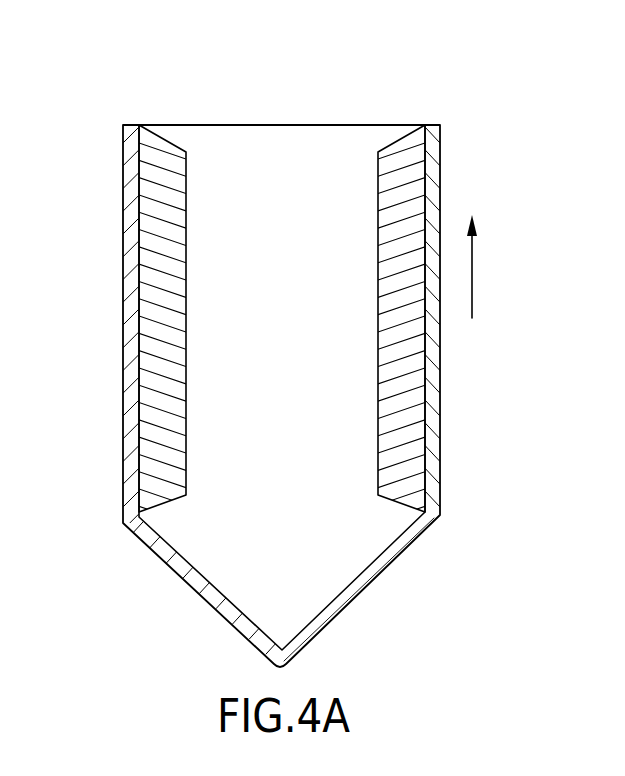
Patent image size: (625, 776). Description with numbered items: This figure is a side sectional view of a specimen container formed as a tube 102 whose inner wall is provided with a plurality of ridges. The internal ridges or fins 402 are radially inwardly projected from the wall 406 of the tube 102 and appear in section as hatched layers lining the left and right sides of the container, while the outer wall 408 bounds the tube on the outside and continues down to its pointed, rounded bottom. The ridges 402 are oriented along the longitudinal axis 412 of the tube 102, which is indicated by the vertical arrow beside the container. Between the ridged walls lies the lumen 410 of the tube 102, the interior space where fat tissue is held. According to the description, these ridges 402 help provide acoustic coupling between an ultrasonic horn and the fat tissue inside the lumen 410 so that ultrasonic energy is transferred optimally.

The tube 102 is at (122, 88).
The internal ridges or fins 402 is at (163, 382).
The wall 406 is at (139, 268).
The outer wall 408 is at (123, 218).
The lumen 410 is at (325, 427).
The longitudinal axis 412 is at (471, 283).